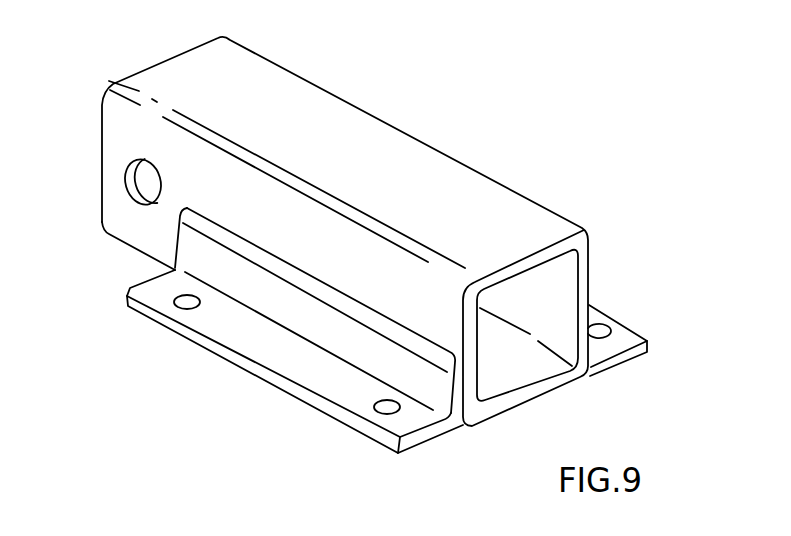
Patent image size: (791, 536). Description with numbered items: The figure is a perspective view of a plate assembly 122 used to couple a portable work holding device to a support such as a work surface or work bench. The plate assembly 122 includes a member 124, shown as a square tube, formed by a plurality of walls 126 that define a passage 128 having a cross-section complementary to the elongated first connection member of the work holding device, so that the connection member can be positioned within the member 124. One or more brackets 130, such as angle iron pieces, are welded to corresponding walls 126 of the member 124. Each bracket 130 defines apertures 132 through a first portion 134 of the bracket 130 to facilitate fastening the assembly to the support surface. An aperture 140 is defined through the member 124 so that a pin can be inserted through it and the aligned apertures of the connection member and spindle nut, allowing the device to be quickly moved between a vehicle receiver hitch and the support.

The plate assembly 122 is at (170, 450).
The member 124 is at (410, 105).
The walls 126 is at (416, 295).
The passage 128 is at (490, 383).
The bracket 130 is at (260, 347).
The apertures 132 is at (183, 306).
The first portion 134 is at (328, 388).
The aperture 140 is at (128, 185).